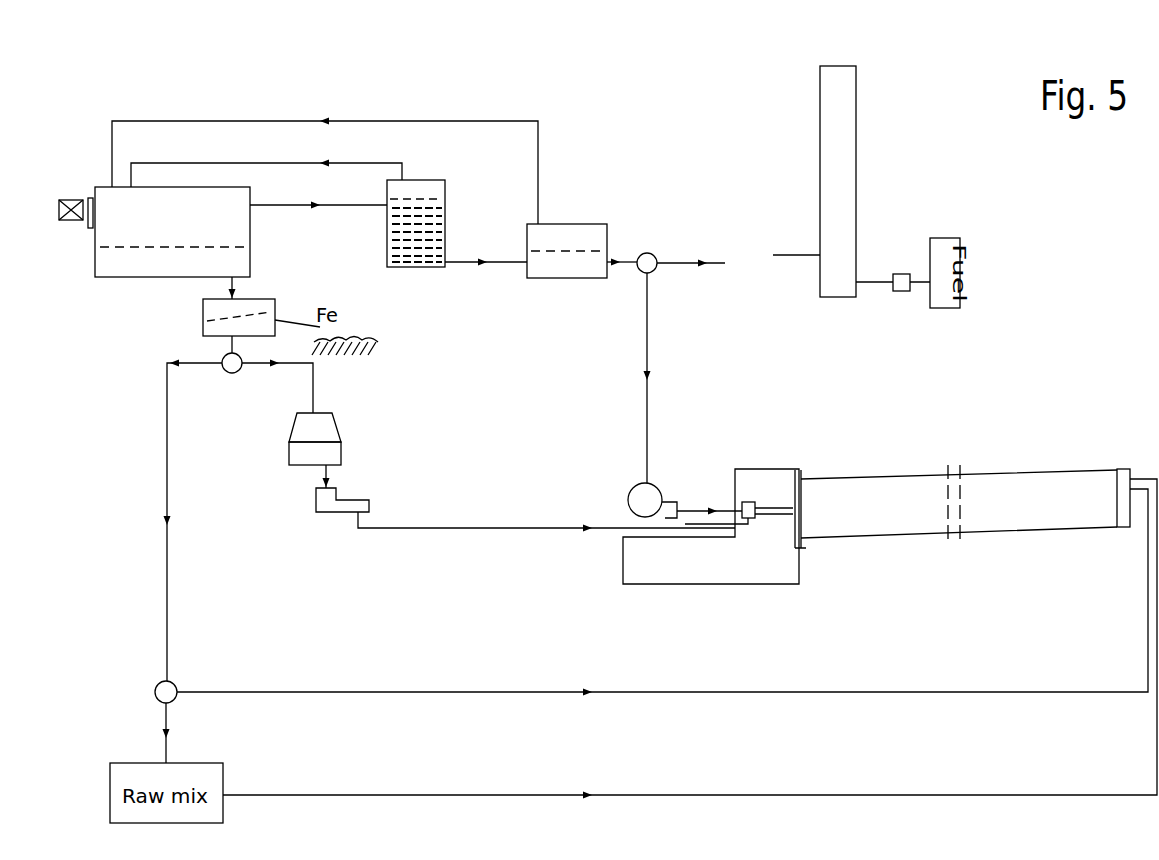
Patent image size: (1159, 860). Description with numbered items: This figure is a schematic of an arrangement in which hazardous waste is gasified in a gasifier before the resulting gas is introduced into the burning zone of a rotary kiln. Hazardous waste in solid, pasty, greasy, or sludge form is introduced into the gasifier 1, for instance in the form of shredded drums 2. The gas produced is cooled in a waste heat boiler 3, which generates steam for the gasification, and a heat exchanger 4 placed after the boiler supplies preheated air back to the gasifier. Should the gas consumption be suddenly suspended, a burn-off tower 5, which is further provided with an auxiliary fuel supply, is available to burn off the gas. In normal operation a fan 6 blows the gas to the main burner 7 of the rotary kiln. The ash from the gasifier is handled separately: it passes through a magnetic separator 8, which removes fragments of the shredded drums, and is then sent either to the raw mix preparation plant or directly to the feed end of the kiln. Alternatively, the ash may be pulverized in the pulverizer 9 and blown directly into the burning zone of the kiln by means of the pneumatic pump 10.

The gasifier 1 is at (235, 223).
The shredded drums 2 is at (72, 198).
The waste heat boiler 3 is at (428, 266).
The heat exchanger 4 is at (567, 265).
The burn-off tower 5 is at (830, 97).
The fan 6 is at (650, 494).
The main burner 7 is at (764, 506).
The magnetic separator 8 is at (205, 330).
The pulverizer 9 is at (333, 433).
The pneumatic pump 10 is at (360, 499).